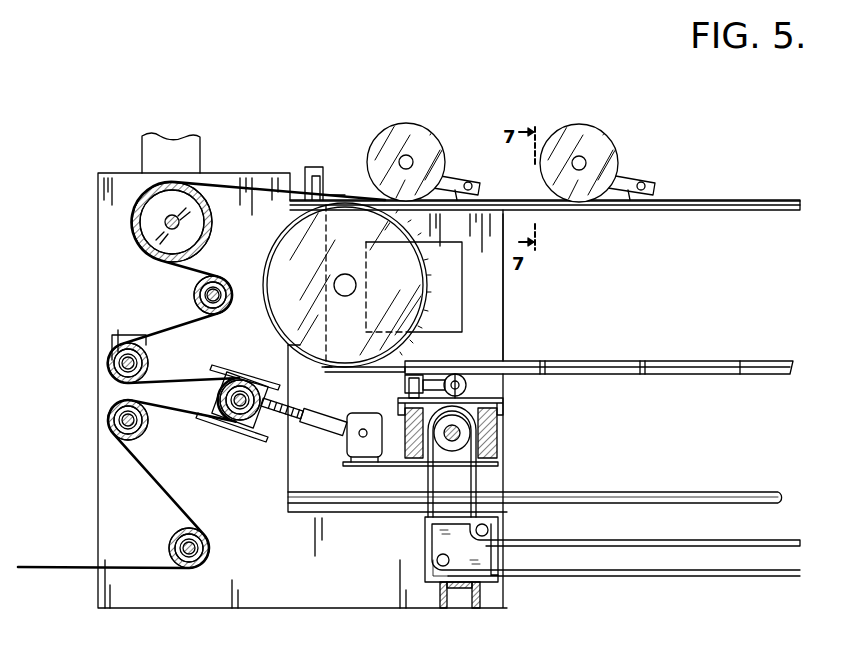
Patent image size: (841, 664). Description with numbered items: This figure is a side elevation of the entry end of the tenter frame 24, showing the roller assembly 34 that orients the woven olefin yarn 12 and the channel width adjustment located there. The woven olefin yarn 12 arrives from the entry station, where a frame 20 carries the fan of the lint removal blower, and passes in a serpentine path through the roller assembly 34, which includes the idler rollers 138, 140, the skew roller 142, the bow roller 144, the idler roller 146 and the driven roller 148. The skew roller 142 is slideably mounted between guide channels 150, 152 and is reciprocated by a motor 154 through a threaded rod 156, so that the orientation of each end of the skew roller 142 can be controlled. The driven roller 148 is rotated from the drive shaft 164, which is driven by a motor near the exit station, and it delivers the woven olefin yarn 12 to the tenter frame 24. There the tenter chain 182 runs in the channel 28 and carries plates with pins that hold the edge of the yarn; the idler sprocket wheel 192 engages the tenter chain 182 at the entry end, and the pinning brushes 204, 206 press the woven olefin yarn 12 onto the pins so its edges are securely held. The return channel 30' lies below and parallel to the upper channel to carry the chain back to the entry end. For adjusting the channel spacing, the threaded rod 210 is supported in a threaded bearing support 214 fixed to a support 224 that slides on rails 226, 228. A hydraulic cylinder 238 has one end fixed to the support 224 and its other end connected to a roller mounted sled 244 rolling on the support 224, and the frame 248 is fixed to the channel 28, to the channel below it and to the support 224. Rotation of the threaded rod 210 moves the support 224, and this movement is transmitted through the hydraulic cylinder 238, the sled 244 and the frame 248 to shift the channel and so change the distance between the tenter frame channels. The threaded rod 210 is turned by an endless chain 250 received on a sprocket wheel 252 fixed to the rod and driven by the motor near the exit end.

The roller assembly 34 is at (96, 128).
The frame 20 is at (188, 150).
The woven olefin yarn 12 is at (36, 566).
The tenter frame 24 is at (724, 190).
The channel 28 is at (783, 212).
The driven roller 148 is at (134, 228).
The idler roller 146 is at (196, 295).
The bow roller 144 is at (108, 366).
The idler roller 140 is at (110, 428).
The skew roller 142 is at (243, 428).
The guide channel 152 is at (218, 366).
The guide channel 150 is at (226, 430).
The idler roller 138 is at (186, 570).
The threaded rod 156 is at (318, 430).
The motor 154 is at (352, 452).
The rail 226 is at (448, 438).
The tenter chain 182 is at (270, 262).
The idler sprocket wheel 192 is at (270, 322).
The pinning brush 204 is at (398, 126).
The pinning brush 206 is at (596, 136).
The frame 248 is at (504, 312).
The guide plate 30' is at (599, 353).
The hydraulic cylinder 238 is at (468, 387).
The roller mounted sled 244 is at (405, 380).
The threaded bearing support 214 is at (398, 411).
The threaded rod 210 is at (500, 410).
The support 224 is at (500, 424).
The sprocket wheel 252 is at (466, 466).
The rail 228 is at (500, 450).
The drive shaft 164 is at (684, 494).
The endless chain 250 is at (640, 580).